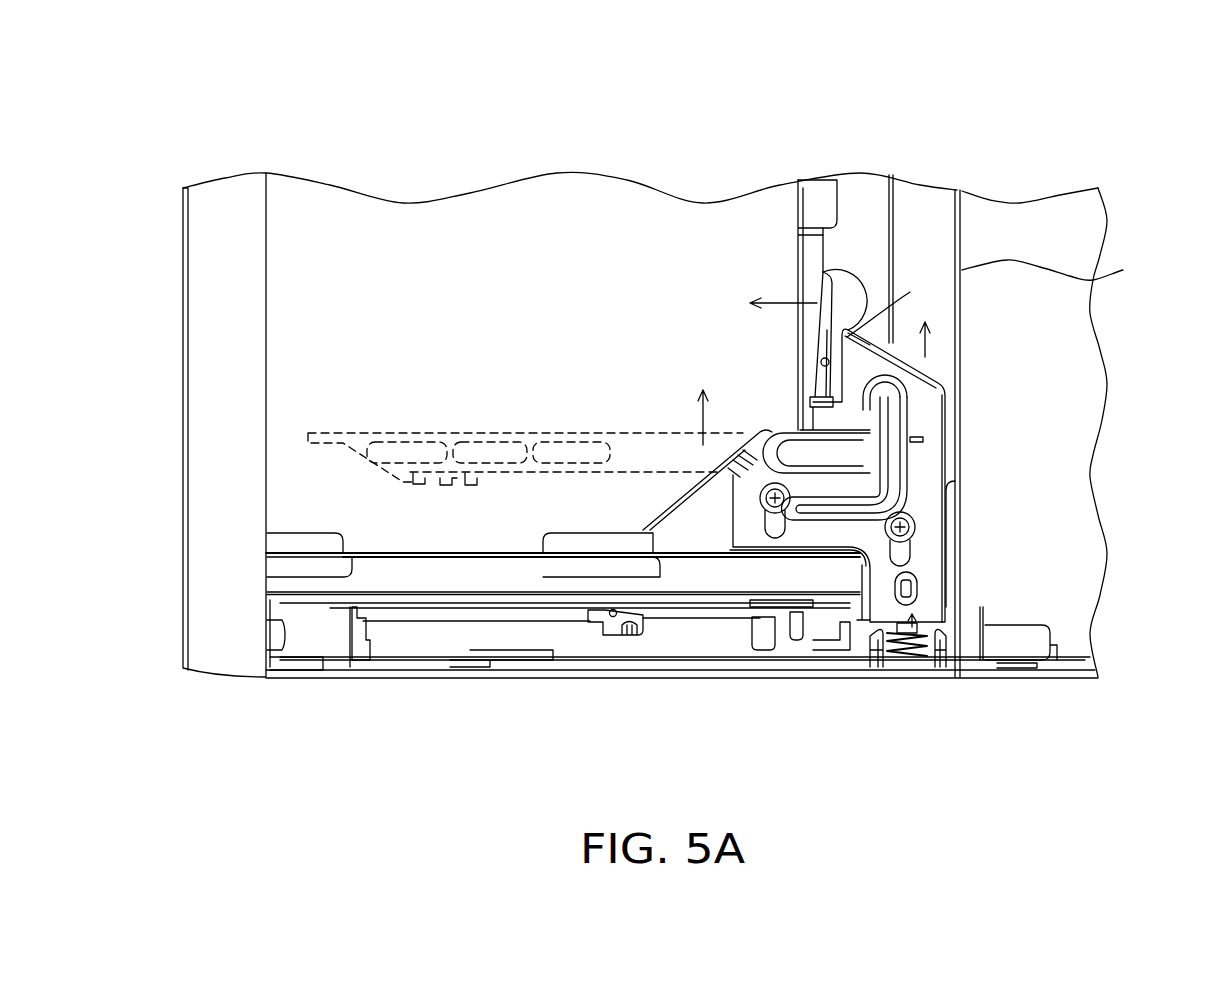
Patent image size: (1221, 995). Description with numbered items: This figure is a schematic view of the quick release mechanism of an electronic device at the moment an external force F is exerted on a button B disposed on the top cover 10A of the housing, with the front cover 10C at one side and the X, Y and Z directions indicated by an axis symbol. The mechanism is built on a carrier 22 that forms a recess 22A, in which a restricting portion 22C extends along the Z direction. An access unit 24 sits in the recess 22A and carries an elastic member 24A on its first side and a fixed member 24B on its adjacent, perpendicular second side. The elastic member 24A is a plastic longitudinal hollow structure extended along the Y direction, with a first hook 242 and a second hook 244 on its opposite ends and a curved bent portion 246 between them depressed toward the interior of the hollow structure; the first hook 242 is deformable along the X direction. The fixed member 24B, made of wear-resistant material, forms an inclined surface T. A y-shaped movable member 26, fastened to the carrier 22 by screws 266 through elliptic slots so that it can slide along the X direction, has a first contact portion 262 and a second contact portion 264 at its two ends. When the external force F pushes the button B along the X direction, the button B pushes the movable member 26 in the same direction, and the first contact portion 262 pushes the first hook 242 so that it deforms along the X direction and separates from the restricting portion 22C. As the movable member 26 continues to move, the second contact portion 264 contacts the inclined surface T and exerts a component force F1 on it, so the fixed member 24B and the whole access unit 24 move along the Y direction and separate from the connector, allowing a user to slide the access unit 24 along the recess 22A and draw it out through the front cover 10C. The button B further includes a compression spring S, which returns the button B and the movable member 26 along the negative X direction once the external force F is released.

The top cover 10A is at (425, 680).
The front cover 10C is at (220, 427).
The carrier 22 is at (1123, 270).
The recess 22A is at (370, 560).
The restricting portion 22C is at (670, 470).
The access unit 24 is at (392, 223).
The elastic member 24A is at (525, 487).
The fixed member 24B is at (813, 268).
The first hook 242 is at (740, 430).
The second hook 244 is at (403, 437).
The curved bent portion 246 is at (553, 437).
The movable member 26 is at (923, 465).
The first contact portion 262 is at (747, 487).
The second contact portion 264 is at (850, 350).
The fastening screws 266 is at (898, 547).
The inclined surface T is at (862, 287).
The component force F1 is at (773, 293).
The spring S is at (907, 652).
The button B is at (893, 667).
The external force F is at (912, 706).
The X direction X is at (1157, 737).
The Y direction Y is at (1149, 745).
The Z direction Z is at (1167, 758).